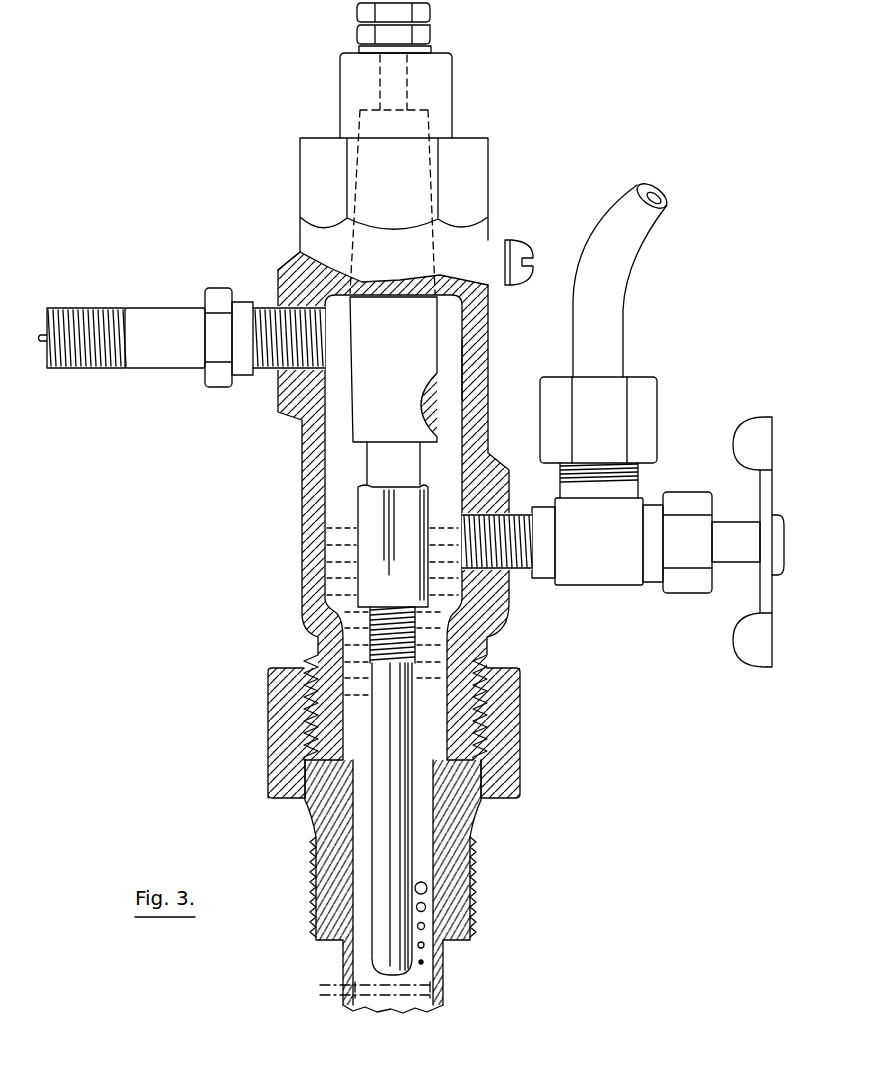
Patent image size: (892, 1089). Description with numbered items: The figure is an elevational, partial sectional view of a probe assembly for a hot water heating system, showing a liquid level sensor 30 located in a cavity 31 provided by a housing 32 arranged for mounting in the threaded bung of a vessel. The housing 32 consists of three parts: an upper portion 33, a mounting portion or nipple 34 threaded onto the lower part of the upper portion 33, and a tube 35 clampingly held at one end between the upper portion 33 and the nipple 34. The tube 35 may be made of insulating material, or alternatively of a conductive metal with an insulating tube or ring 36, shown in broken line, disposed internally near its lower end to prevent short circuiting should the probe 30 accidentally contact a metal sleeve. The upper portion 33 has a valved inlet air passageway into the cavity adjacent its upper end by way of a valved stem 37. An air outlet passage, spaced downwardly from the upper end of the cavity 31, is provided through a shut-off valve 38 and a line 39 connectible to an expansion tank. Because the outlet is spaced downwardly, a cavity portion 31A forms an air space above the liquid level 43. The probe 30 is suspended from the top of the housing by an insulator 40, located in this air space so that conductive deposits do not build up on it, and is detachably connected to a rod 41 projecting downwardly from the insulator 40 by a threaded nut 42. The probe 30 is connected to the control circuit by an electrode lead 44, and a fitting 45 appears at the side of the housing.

The liquid level sensor 30 is at (398, 850).
The cavity 31 is at (423, 797).
The cavity portion 31A is at (447, 375).
The housing 32 is at (303, 603).
The upper portion 33 is at (310, 523).
The mounting portion or nipple 34 is at (282, 783).
The tube 35 is at (450, 967).
The insulating tube or ring 36 is at (320, 988).
The valved stem 37 is at (167, 308).
The shut-off valve 38 is at (620, 572).
The line 39 is at (624, 331).
The insulator 40 is at (363, 410).
The rod 41 is at (380, 455).
The threaded nut 42 is at (363, 543).
The liquid level 43 is at (343, 529).
The electrode lead 44 is at (424, 10).
The vent screw 45 is at (517, 243).